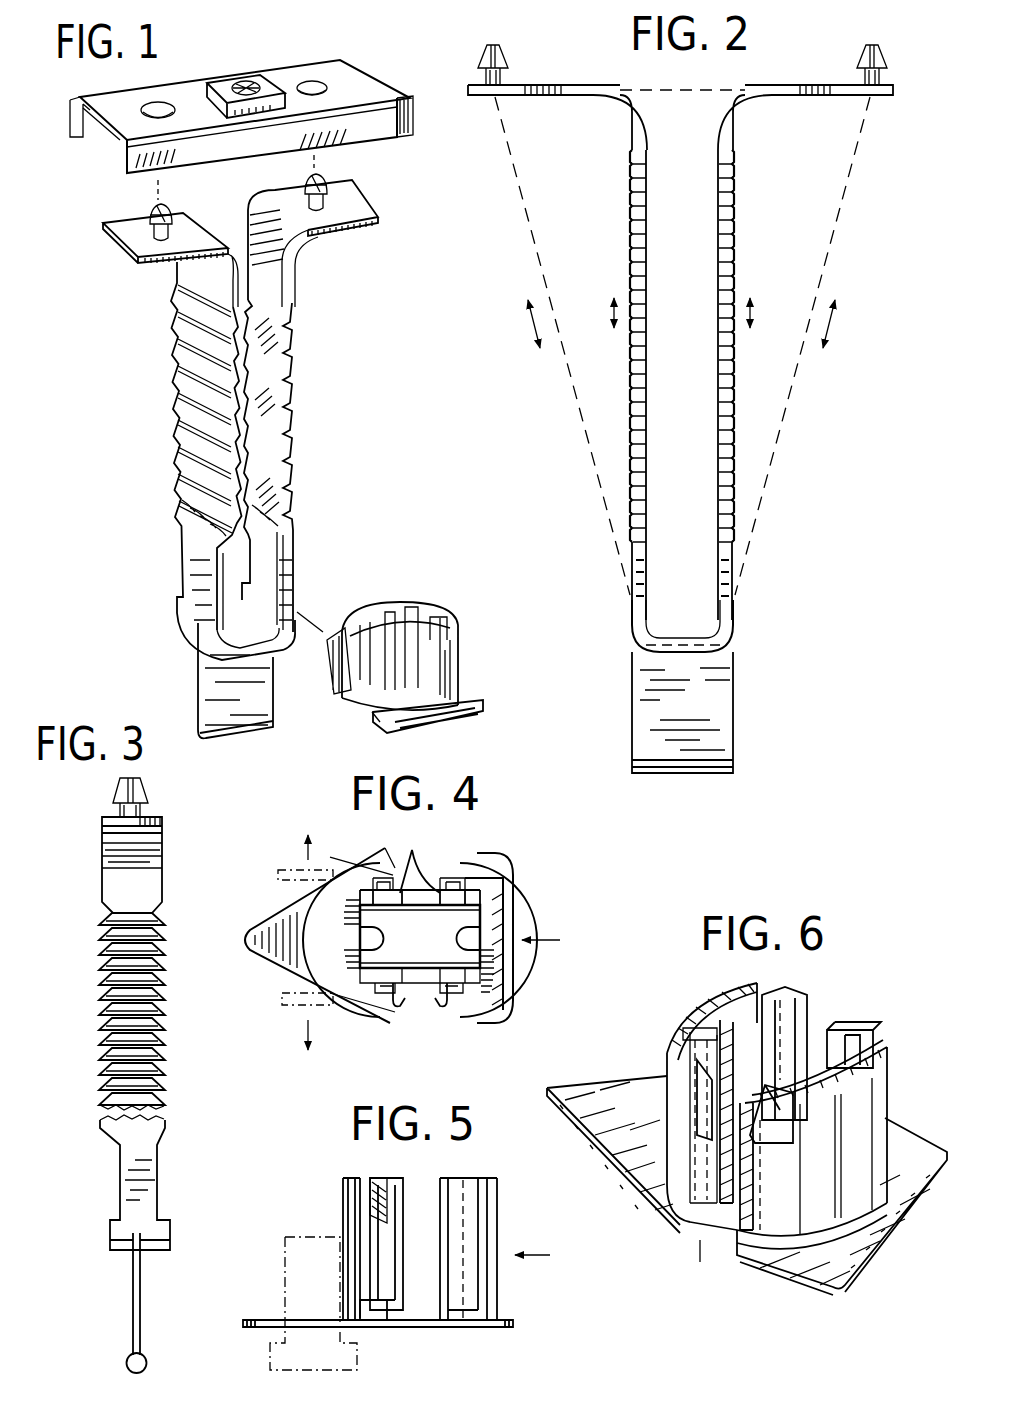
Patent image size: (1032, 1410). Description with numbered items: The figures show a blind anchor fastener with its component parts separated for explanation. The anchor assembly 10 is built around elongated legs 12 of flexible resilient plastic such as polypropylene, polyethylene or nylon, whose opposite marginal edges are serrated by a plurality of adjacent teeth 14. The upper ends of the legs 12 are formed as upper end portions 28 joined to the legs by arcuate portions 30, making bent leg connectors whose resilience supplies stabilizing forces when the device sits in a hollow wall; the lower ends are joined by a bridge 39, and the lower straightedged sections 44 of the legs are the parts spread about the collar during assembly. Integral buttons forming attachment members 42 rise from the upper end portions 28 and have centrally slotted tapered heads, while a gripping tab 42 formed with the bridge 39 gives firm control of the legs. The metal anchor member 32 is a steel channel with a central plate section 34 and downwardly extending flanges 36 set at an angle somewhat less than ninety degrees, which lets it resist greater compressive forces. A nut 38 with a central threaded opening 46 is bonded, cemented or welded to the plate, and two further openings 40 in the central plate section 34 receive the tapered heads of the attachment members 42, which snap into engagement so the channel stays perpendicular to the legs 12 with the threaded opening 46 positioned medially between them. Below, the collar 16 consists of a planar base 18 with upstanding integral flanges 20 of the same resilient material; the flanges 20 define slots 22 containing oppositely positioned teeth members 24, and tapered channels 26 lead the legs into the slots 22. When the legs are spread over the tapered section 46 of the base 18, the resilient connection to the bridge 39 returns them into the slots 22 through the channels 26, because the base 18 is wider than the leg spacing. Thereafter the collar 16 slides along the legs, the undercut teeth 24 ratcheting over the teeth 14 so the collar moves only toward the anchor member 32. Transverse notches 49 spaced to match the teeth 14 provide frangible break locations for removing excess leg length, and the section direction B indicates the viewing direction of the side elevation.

In FIG. 1, the anchor assembly 10 is at (155, 436).
In FIG. 1, the legs 12 is at (195, 352).
In FIG. 2, the legs 12 is at (690, 318).
In FIG. 3, the legs 12 is at (150, 990).
In FIG. 4, the legs 12 is at (288, 870).
In FIG. 5, the legs 12 is at (285, 1272).
In FIG. 1, the teeth 14 is at (178, 320).
In FIG. 2, the teeth 14 is at (725, 248).
In FIG. 3, the teeth 14 is at (115, 950).
In FIG. 1, the collar 16 is at (470, 618).
In FIG. 4, the collar 16 is at (530, 855).
In FIG. 5, the collar 16 is at (515, 1232).
In FIG. 6, the collar 16 is at (852, 968).
In FIG. 1, the base 18 is at (470, 700).
In FIG. 4, the base 18 is at (513, 885).
In FIG. 5, the base 18 is at (500, 1320).
In FIG. 6, the base 18 is at (910, 1132).
In FIG. 1, the flanges 20 is at (380, 612).
In FIG. 4, the flanges 20 is at (492, 918).
In FIG. 5, the flanges 20 is at (345, 1210).
In FIG. 6, the flanges 20 is at (697, 1015).
In FIG. 1, the slots 22 is at (435, 618).
In FIG. 4, the slots 22 is at (412, 862).
In FIG. 5, the slots 22 is at (393, 1190).
In FIG. 6, the slots 22 is at (805, 1010).
In FIG. 1, the teeth members 24 is at (345, 663).
In FIG. 4, the teeth members 24 is at (383, 865).
In FIG. 5, the teeth members 24 is at (386, 1200).
In FIG. 6, the teeth members 24 is at (700, 1120).
In FIG. 1, the tapered channels 26 is at (372, 712).
In FIG. 4, the tapered channels 26 is at (385, 890).
In FIG. 5, the tapered channels 26 is at (443, 1312).
In FIG. 6, the tapered channels 26 is at (700, 1225).
In FIG. 1, the upper end portions 28 is at (115, 235).
In FIG. 2, the upper end portions 28 is at (505, 96).
In FIG. 3, the upper end portions 28 is at (112, 818).
In FIG. 1, the arcuate portions 30 is at (183, 270).
In FIG. 2, the arcuate portions 30 is at (632, 135).
In FIG. 3, the arcuate portions 30 is at (112, 842).
In FIG. 1, the anchor member 32 is at (362, 68).
In FIG. 1, the central plate section 34 is at (112, 128).
In FIG. 1, the flanges 36 is at (73, 118).
In FIG. 1, the nut 38 is at (222, 80).
In FIG. 1, the bridge 39 is at (242, 630).
In FIG. 2, the bridge 39 is at (698, 635).
In FIG. 1, the openings 40 is at (153, 102).
In FIG. 1, the attachment members 42 is at (170, 212).
In FIG. 2, the attachment members 42 is at (503, 55).
In FIG. 3, the attachment members 42 is at (132, 800).
In FIG. 1, the lower straightedged sections 44 is at (186, 552).
In FIG. 2, the lower straightedged sections 44 is at (633, 572).
In FIG. 3, the lower straightedged sections 44 is at (130, 1182).
In FIG. 1, the central threaded opening 46 is at (243, 80).
In FIG. 1, the transverse notches 49 is at (183, 410).
In FIG. 2, the transverse notches 49 is at (733, 196).
In FIG. 3, the transverse notches 49 is at (115, 1020).
In FIG. 2, the section direction B is at (853, 332).